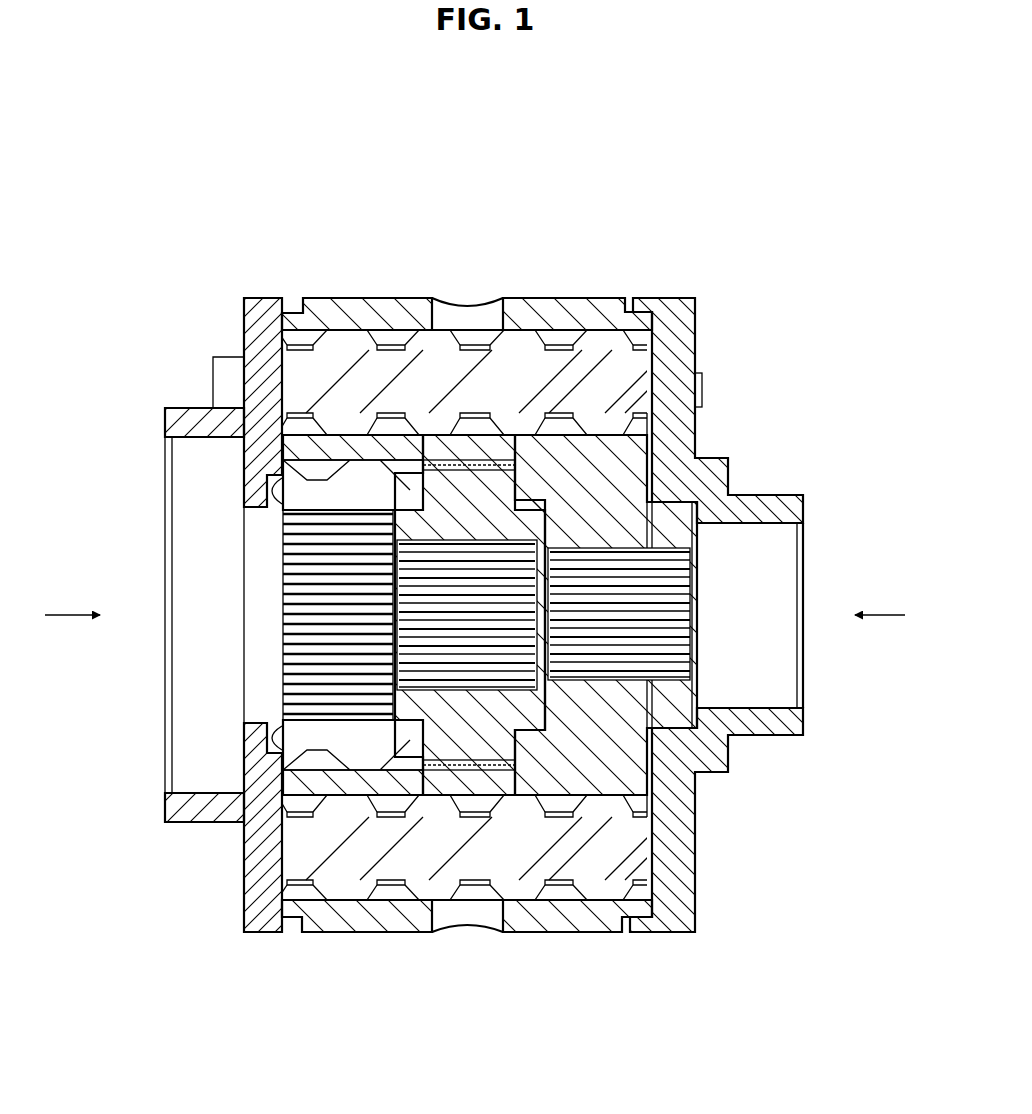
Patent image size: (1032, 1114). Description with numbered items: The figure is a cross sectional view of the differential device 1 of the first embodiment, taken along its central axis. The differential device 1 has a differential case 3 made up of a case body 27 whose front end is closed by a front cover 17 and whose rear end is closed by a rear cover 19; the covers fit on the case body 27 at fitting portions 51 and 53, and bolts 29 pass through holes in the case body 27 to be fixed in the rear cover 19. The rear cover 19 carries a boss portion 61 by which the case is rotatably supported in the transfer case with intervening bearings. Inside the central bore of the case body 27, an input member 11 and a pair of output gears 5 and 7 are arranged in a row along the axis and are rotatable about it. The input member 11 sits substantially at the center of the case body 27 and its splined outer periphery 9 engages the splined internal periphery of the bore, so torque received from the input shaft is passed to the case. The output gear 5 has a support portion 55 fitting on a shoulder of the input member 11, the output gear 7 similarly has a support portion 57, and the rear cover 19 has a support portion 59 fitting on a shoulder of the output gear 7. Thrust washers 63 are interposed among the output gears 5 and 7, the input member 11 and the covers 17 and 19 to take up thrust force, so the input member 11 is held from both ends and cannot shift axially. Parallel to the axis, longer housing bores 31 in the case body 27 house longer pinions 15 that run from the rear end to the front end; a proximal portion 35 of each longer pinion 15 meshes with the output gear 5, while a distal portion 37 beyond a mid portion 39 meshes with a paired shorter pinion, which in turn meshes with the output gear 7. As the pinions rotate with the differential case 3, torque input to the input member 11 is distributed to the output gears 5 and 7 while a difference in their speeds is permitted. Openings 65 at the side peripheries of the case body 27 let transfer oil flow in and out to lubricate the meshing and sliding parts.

The differential device 1 is at (714, 183).
The differential case 3 is at (296, 237).
The output gear 5 is at (344, 503).
The output gear 7 is at (579, 503).
The splined outer periphery 9 is at (560, 527).
The input member 11 is at (438, 525).
The longer pinion 15 is at (668, 365).
The front cover 17 is at (257, 292).
The rear cover 19 is at (653, 293).
The case body 27 is at (538, 293).
The bolt 29 is at (227, 362).
The longer housing bore 31 is at (381, 330).
The proximal portion 35 is at (586, 392).
The distal portion 37 is at (328, 392).
The mid portion 39 is at (459, 392).
The fitting portion 51 is at (290, 940).
The fitting portion 53 is at (641, 940).
The support portion 55 is at (404, 716).
The support portion 57 is at (655, 770).
The support portion 59 is at (675, 707).
The boss portion 61 is at (770, 736).
The thrust washer 63 is at (530, 512).
The opening 65 is at (472, 304).